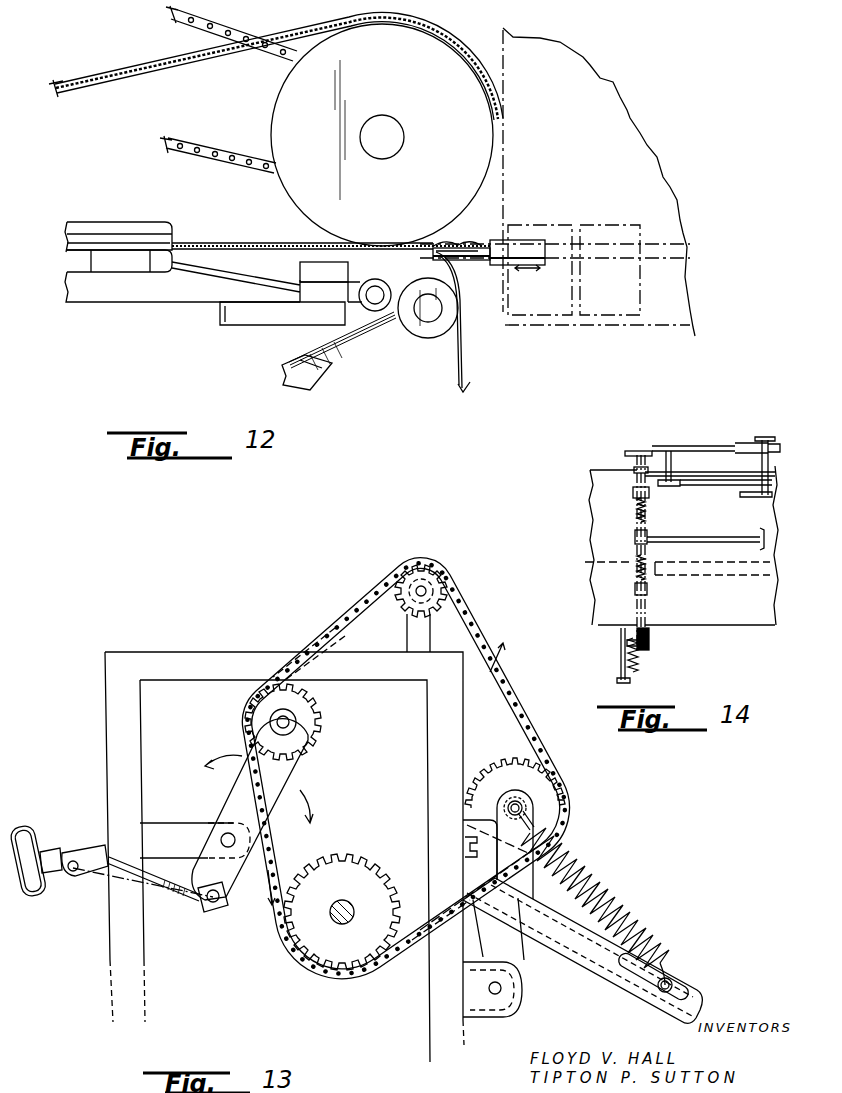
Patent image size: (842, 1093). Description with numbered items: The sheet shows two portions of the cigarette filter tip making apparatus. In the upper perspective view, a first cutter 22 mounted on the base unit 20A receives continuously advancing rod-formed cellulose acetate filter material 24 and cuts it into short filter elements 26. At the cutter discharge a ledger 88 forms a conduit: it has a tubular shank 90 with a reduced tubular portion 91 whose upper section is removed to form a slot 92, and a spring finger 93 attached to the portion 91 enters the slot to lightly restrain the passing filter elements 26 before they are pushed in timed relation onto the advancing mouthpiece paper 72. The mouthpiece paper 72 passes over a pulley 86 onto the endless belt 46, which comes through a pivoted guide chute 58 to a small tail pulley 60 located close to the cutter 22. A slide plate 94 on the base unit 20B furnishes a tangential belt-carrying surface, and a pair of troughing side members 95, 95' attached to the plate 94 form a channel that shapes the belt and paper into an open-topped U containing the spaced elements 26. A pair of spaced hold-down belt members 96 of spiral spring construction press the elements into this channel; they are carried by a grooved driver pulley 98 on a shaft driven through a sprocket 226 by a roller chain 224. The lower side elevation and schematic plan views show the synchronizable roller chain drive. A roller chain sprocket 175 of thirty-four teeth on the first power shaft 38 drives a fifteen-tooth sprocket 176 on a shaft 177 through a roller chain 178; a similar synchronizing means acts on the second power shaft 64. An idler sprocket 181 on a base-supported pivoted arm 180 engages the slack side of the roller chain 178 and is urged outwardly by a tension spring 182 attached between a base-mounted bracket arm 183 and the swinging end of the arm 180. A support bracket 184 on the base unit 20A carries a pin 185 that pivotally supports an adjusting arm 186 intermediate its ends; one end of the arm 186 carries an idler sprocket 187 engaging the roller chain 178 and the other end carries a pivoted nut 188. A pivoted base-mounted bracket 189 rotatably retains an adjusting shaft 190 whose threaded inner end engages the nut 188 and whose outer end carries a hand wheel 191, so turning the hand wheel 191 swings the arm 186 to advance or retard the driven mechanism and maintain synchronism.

In FIG. 12, the hold-down belt members 96 is at (300, 28).
In FIG. 14, the hold-down belt members 96 is at (702, 446).
In FIG. 12, the grooved driver pulley 98 is at (394, 64).
In FIG. 14, the grooved driver pulley 98 is at (660, 446).
In FIG. 12, the roller chain 224 is at (196, 152).
In FIG. 14, the roller chain 224 is at (720, 480).
In FIG. 12, the first cutter 22 is at (658, 150).
In FIG. 12, the rod-formed cellulose acetate filter material 24 is at (685, 252).
In FIG. 12, the filter elements 26 is at (568, 258).
In FIG. 12, the ledger 88 is at (526, 228).
In FIG. 12, the tubular shank 90 is at (542, 240).
In FIG. 12, the spring finger 93 is at (476, 246).
In FIG. 12, the slot 92 is at (450, 244).
In FIG. 12, the reduced tubular portion 91 is at (466, 257).
In FIG. 12, the troughing side member 95' is at (118, 227).
In FIG. 12, the troughing side member 95 is at (119, 269).
In FIG. 12, the slide plate 94 is at (108, 296).
In FIG. 12, the tail pulley 60 is at (376, 311).
In FIG. 12, the pulley 86 is at (428, 330).
In FIG. 12, the mouthpiece paper 72 is at (465, 358).
In FIG. 12, the endless belt 46 is at (338, 340).
In FIG. 12, the pivoted guide chute 58 is at (318, 374).
In FIG. 14, the base unit 20A is at (592, 508).
In FIG. 13, the base unit 20A is at (212, 652).
In FIG. 14, the base unit 20B is at (735, 618).
In FIG. 14, the first power shaft 38 is at (603, 573).
In FIG. 13, the first power shaft 38 is at (354, 906).
In FIG. 14, the hand wheel 191 is at (634, 452).
In FIG. 13, the hand wheel 191 is at (40, 834).
In FIG. 14, the pivoted base-mounted bracket 189 is at (634, 468).
In FIG. 13, the pivoted base-mounted bracket 189 is at (92, 850).
In FIG. 14, the adjusting shaft 190 is at (633, 489).
In FIG. 13, the adjusting shaft 190 is at (176, 898).
In FIG. 14, the sprocket 226 is at (674, 480).
In FIG. 14, the idler sprocket 187 is at (648, 512).
In FIG. 13, the idler sprocket 187 is at (313, 713).
In FIG. 14, the sprocket 176 is at (648, 536).
In FIG. 13, the sprocket 176 is at (446, 602).
In FIG. 14, the shaft 177 is at (704, 544).
In FIG. 13, the shaft 177 is at (430, 590).
In FIG. 14, the roller chain sprocket 175 is at (650, 580).
In FIG. 13, the roller chain sprocket 175 is at (382, 876).
In FIG. 14, the second power shaft 64 is at (724, 572).
In FIG. 14, the idler sprocket 181 is at (652, 646).
In FIG. 13, the idler sprocket 181 is at (550, 805).
In FIG. 14, the bracket arm 183 is at (618, 648).
In FIG. 13, the bracket arm 183 is at (630, 984).
In FIG. 14, the tension spring 182 is at (640, 666).
In FIG. 13, the tension spring 182 is at (582, 858).
In FIG. 13, the roller chain 178 is at (512, 694).
In FIG. 13, the adjusting arm 186 is at (290, 768).
In FIG. 13, the support bracket 184 is at (172, 834).
In FIG. 13, the pin 185 is at (226, 833).
In FIG. 13, the pivoted nut 188 is at (210, 910).
In FIG. 13, the pivoted arm 180 is at (508, 956).